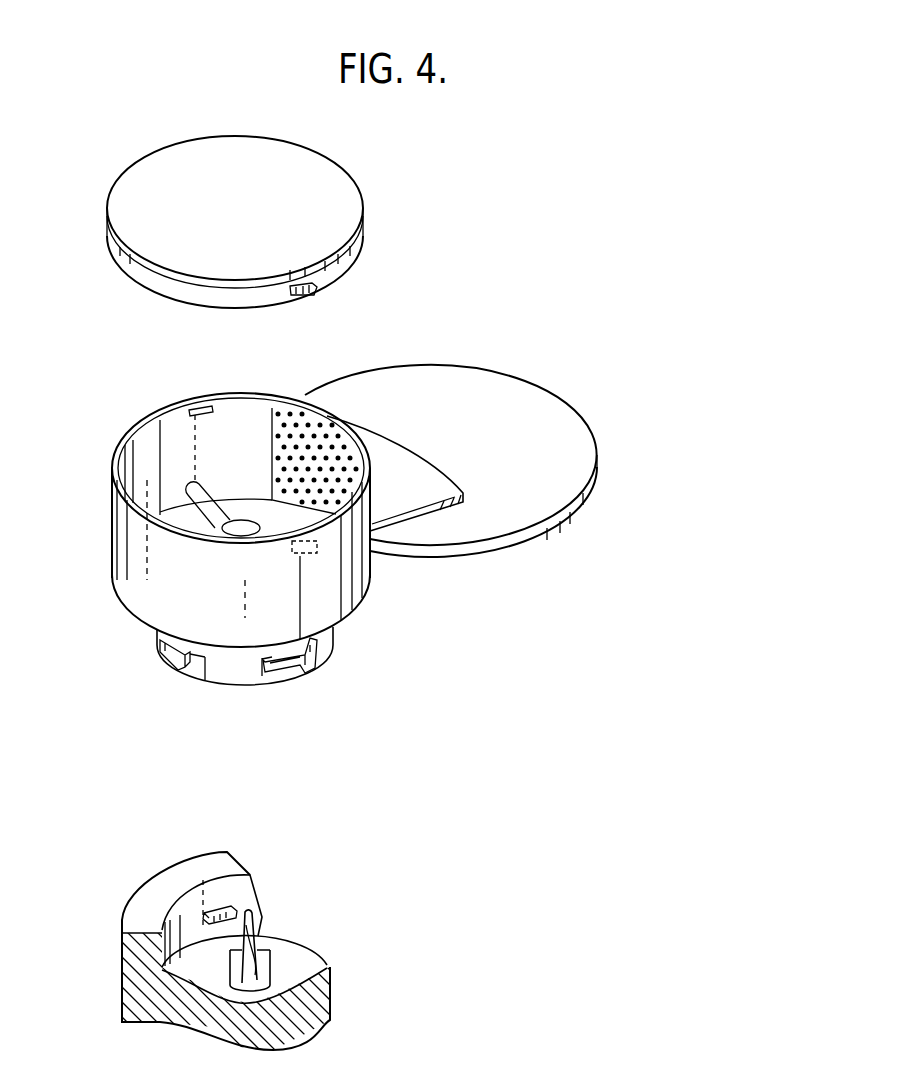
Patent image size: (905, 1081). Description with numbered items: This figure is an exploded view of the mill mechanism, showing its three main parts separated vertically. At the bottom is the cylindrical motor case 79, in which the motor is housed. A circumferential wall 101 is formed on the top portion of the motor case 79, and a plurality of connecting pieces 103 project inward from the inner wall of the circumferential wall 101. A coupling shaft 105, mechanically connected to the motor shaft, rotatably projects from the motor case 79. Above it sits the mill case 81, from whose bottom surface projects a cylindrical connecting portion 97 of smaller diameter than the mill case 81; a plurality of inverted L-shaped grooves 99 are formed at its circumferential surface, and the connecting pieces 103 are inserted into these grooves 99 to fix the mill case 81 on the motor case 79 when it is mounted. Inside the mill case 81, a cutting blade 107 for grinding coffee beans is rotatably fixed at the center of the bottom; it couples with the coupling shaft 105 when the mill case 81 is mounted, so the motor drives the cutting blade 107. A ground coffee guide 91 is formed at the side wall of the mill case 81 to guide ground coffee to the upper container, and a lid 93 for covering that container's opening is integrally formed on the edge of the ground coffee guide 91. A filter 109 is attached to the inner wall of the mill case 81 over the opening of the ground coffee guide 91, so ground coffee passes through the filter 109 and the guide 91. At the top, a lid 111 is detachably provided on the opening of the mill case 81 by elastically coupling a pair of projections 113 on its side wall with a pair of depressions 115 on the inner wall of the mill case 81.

The motor case 79 is at (232, 945).
The mill case 81 is at (112, 543).
The ground coffee guide 91 is at (367, 428).
The lid 93 is at (512, 388).
The cylindrical connecting portion 97 is at (232, 670).
The inverted L-shaped grooves 99 is at (162, 655).
The circumferential wall 101 is at (147, 882).
The connecting pieces 103 is at (222, 905).
The coupling shaft 105 is at (258, 913).
The cutting blade 107 is at (226, 508).
The filter 109 is at (290, 425).
The lid 111 is at (232, 150).
The projections 113 is at (313, 296).
The depressions 115 is at (201, 405).